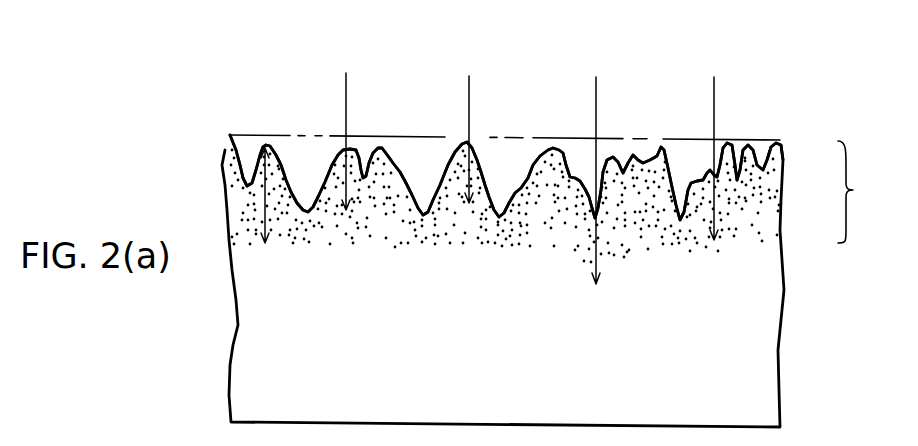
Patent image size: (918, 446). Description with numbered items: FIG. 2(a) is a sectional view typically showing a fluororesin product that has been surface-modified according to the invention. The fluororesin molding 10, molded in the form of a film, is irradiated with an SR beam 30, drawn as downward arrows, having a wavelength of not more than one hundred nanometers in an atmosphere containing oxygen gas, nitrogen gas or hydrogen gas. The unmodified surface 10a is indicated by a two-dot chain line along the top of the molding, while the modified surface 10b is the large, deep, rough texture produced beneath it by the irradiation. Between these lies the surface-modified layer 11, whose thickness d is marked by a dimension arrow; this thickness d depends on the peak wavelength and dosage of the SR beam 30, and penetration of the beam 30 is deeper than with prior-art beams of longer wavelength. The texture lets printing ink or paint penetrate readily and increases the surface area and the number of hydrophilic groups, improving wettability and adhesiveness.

The fluororesin molding 10 is at (781, 116).
The unmodified surface 10a is at (654, 138).
The modified surface 10b is at (563, 137).
The surface-modified layer 11 is at (561, 201).
The SR beam 30 is at (347, 95).
The thickness of the surface-modified layer d is at (264, 200).